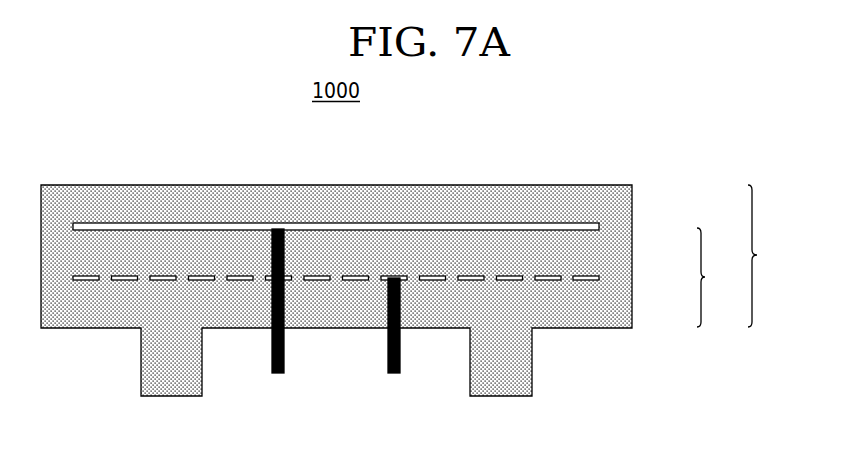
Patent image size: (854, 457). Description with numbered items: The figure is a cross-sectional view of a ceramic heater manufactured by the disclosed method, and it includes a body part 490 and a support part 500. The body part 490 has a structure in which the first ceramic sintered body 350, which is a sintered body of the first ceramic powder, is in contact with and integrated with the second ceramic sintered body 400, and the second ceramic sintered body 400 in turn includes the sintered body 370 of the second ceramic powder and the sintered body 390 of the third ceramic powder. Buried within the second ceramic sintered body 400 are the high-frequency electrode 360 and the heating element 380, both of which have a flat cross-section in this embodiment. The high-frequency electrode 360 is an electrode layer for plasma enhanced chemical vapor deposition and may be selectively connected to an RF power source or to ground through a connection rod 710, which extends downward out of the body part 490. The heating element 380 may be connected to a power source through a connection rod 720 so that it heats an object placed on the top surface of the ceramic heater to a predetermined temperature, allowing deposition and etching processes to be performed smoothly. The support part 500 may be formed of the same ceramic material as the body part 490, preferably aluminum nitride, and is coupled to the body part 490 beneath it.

The first ceramic sintered body 350 is at (595, 205).
The high-frequency electrode 360 is at (344, 223).
The sintered body 370 is at (595, 252).
The heating element 380 is at (437, 276).
The sintered body 390 is at (595, 308).
The second ceramic sintered body 400 is at (722, 277).
The body part 490 is at (773, 256).
The support part 500 is at (562, 373).
The connection rod 710 is at (278, 374).
The connection rod 720 is at (394, 374).